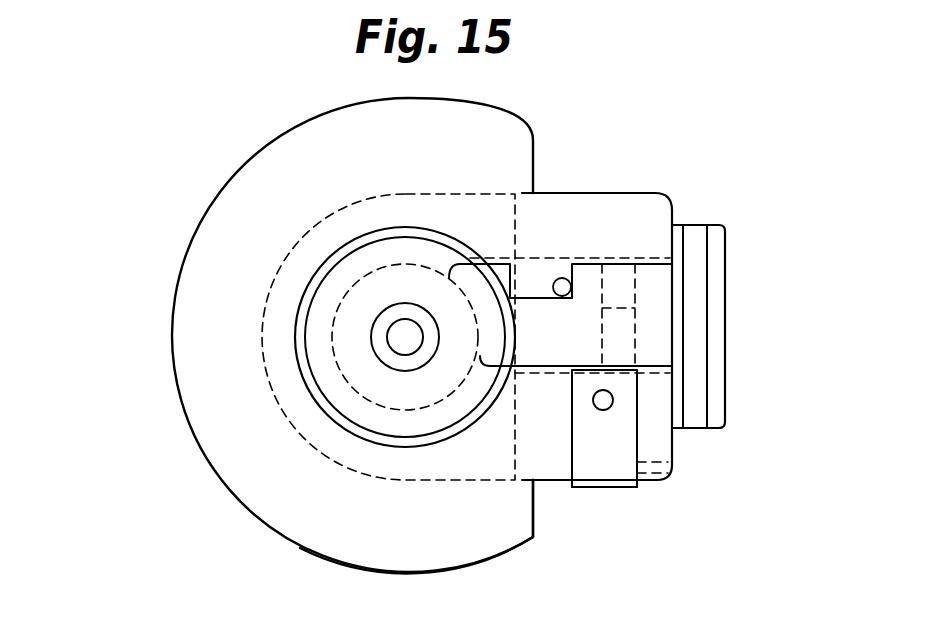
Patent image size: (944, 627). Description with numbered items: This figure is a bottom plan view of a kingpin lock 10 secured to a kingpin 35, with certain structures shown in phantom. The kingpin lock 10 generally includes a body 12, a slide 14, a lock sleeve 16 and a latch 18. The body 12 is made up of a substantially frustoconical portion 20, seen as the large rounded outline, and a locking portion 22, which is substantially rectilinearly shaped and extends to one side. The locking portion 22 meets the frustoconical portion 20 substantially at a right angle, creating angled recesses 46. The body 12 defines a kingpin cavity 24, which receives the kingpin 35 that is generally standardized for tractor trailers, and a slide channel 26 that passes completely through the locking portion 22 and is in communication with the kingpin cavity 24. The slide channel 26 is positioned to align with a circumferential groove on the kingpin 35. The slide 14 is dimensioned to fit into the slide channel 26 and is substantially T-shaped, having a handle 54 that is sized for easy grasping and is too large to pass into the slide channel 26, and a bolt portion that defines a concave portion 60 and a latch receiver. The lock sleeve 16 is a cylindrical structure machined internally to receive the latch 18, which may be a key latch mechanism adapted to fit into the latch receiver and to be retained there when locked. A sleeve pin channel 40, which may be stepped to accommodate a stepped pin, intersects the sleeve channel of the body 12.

The kingpin lock 10 is at (570, 135).
The body 12 is at (497, 99).
The slide 14 is at (723, 400).
The lock sleeve 16 is at (622, 490).
The latch 18 is at (620, 318).
The frustoconical portion 20 is at (357, 567).
The locking portion 22 is at (663, 475).
The kingpin cavity 24 is at (303, 380).
The slide channel 26 is at (548, 257).
The kingpin 35 is at (363, 418).
The sleeve pin channel 40 is at (612, 405).
The angled recesses 46 is at (535, 512).
The handle 54 is at (723, 250).
The concave portion 60 is at (460, 262).